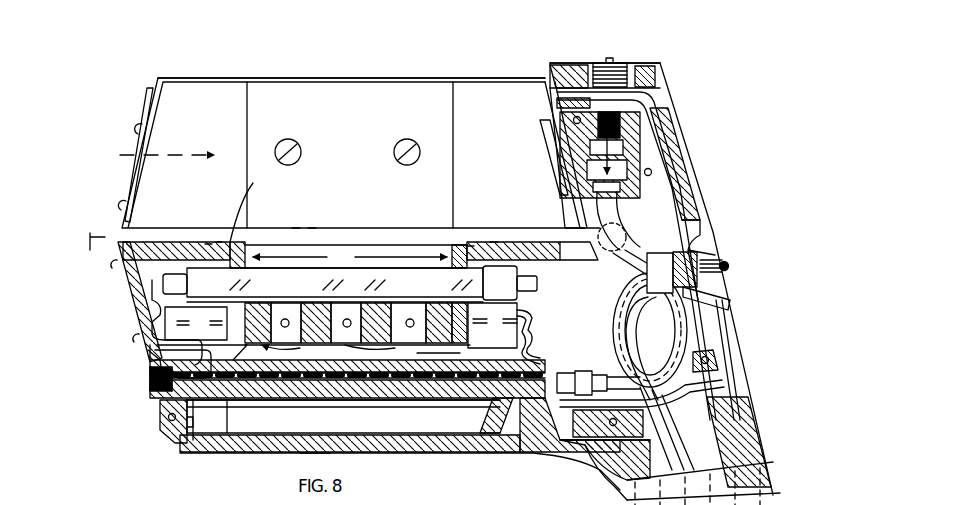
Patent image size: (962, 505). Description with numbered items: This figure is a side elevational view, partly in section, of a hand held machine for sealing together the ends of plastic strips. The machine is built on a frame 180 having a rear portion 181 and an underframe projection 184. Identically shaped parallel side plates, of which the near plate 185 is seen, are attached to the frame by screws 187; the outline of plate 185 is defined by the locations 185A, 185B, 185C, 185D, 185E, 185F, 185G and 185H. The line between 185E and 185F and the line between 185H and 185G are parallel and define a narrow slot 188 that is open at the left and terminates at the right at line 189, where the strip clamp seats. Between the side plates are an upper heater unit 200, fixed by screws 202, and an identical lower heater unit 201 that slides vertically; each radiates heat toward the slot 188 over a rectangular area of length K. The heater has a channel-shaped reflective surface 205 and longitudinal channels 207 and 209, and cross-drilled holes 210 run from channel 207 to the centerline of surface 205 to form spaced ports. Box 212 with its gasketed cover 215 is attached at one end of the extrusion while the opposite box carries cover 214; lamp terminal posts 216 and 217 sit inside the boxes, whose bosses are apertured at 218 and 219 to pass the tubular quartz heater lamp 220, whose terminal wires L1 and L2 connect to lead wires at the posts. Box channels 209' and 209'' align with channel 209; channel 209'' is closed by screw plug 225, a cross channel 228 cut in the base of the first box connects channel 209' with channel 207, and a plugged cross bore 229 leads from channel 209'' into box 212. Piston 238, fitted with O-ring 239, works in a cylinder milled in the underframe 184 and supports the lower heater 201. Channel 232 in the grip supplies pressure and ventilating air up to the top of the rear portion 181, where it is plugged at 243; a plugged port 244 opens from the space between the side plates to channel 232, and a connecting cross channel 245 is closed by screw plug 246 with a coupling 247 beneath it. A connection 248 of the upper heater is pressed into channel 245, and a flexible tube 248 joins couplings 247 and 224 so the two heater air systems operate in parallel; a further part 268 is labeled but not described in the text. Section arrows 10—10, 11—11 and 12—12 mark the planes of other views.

The section arrows 10— 10 is at (62, 373).
The section arrows 11— 11 is at (95, 42).
The section arrows 12— 12 is at (627, 13).
The frame 180 is at (707, 185).
The rear portion 181 is at (708, 213).
The underframe projection 184 is at (440, 449).
The side plate 185 is at (228, 97).
The plate location 185A is at (160, 78).
The plate location 185B is at (660, 92).
The plate location 185C is at (740, 448).
The plate location 185D is at (175, 440).
The plate location 185E is at (133, 257).
The plate location 185F is at (605, 242).
The plate location 185G is at (560, 215).
The plate location 185H is at (133, 228).
The screws 187 is at (168, 417).
The narrow slot 188 is at (312, 231).
The line 189 is at (568, 228).
The upper heater unit 200 is at (134, 161).
The lower heater unit 201 is at (150, 310).
The screws 202 is at (397, 150).
The channel-shaped reflective surface 205 is at (295, 228).
The longitudinal channel 207 is at (408, 455).
The longitudinal channel 209 is at (343, 408).
The box channel 209' is at (478, 410).
The box channel 209'' is at (234, 410).
The cross-drilled holes 210 is at (400, 348).
The box 212 is at (218, 244).
The gasketed removable cover 214 is at (615, 302).
The gasketed removable cover 215 is at (130, 285).
The lamp terminal post 216 is at (495, 246).
The lamp terminal post 217 is at (228, 244).
The aperture 218 is at (470, 248).
The aperture 219 is at (207, 246).
The tubular quartz heater lamp 220 is at (384, 297).
The coupling 224 is at (585, 371).
The screw plug 225 is at (147, 375).
The cross channel 228 is at (432, 358).
The cross bore 229 is at (147, 347).
The channel 232 is at (780, 494).
The piston 238 is at (280, 403).
The O-ring 239 is at (197, 410).
The plug 243 is at (657, 62).
The port 244 is at (730, 397).
The connecting cross channel 245 is at (562, 68).
The screw plug 246 is at (608, 60).
The coupling 247 is at (586, 163).
The connection 248 is at (560, 103).
The bolt 268 is at (728, 265).
The length K is at (356, 256).
The terminal wire L1 is at (150, 384).
The terminal wire L2 is at (556, 335).